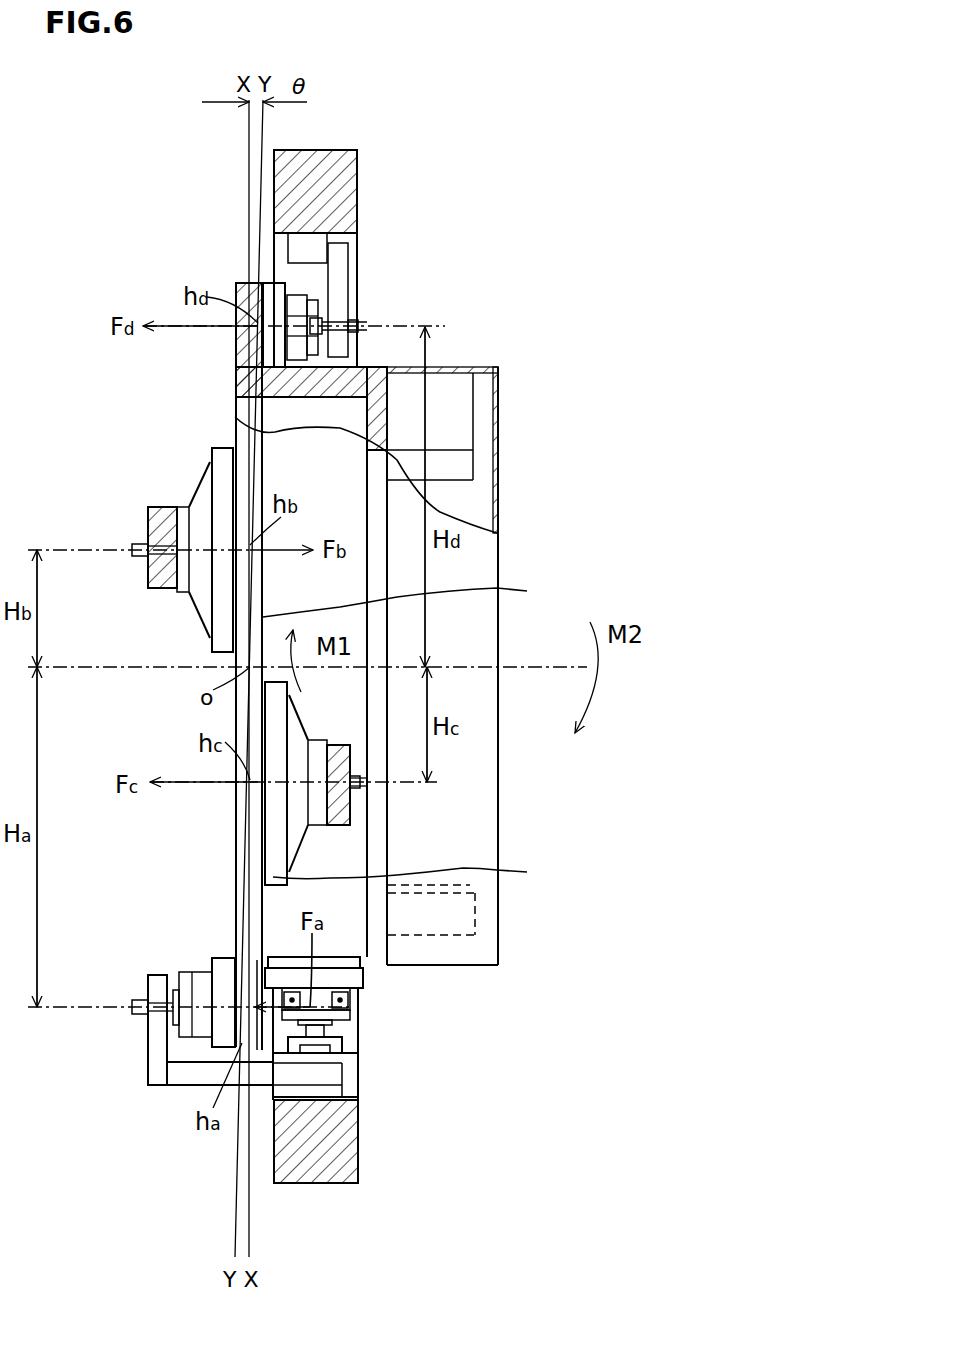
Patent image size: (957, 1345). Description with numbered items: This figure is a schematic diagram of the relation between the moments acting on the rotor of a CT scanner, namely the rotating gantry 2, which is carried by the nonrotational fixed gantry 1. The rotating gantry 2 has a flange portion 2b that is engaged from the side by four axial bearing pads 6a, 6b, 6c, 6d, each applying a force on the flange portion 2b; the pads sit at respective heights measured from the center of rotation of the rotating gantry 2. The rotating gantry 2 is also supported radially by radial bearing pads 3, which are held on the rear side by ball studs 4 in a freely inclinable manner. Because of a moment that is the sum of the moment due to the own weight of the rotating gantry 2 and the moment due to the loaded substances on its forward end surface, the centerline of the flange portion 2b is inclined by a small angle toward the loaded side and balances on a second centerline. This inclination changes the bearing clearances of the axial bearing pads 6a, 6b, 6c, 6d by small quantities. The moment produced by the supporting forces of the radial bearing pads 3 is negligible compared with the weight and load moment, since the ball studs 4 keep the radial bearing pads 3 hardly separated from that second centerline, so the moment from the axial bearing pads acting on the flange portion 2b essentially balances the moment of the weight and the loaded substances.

The fixed gantry 1 is at (337, 193).
The rotating gantry 2 is at (347, 367).
The flange portion 2b is at (238, 373).
The radial bearing pads 3 is at (347, 978).
The ball studs 4 is at (330, 1025).
The axial bearing pad 6a is at (222, 965).
The axial bearing pad 6b is at (218, 472).
The axial bearing pad 6c is at (411, 786).
The axial bearing pad 6d is at (275, 290).